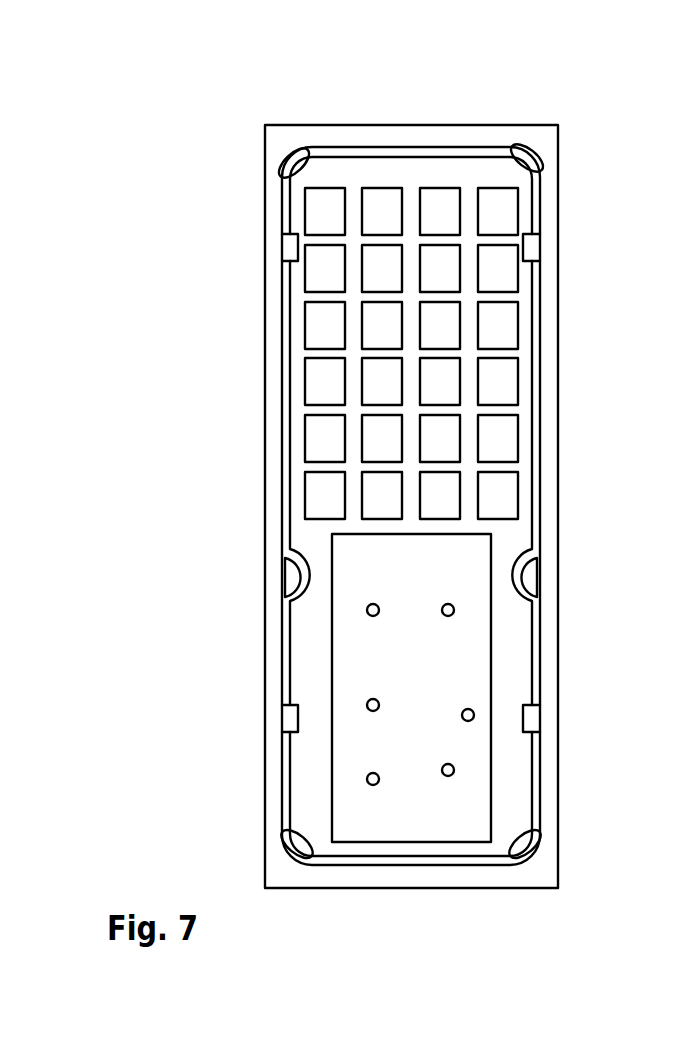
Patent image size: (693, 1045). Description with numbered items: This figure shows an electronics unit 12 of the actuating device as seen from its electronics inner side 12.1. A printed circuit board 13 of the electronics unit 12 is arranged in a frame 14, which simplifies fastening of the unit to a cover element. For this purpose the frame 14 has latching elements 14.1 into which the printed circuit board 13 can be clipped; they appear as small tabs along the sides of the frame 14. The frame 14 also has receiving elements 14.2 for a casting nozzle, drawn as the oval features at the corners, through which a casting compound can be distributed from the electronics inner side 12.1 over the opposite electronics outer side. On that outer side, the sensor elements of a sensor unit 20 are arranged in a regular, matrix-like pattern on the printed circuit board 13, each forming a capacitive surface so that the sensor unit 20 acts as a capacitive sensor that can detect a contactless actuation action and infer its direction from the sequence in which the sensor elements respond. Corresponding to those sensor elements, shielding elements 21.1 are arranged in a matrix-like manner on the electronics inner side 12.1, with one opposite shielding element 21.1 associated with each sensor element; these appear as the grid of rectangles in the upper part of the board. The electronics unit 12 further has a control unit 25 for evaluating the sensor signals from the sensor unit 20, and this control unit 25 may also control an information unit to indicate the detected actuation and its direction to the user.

The electronics unit 12 is at (335, 458).
The electronics inner side 12.1 is at (411, 506).
The printed circuit board 13 is at (520, 640).
The frame 14 is at (548, 437).
The latching elements 14.1 is at (535, 243).
The receiving elements 14.2 is at (528, 157).
The sensor unit 20 is at (548, 203).
The shielding elements 21.1 is at (387, 195).
The control unit 25 is at (478, 678).